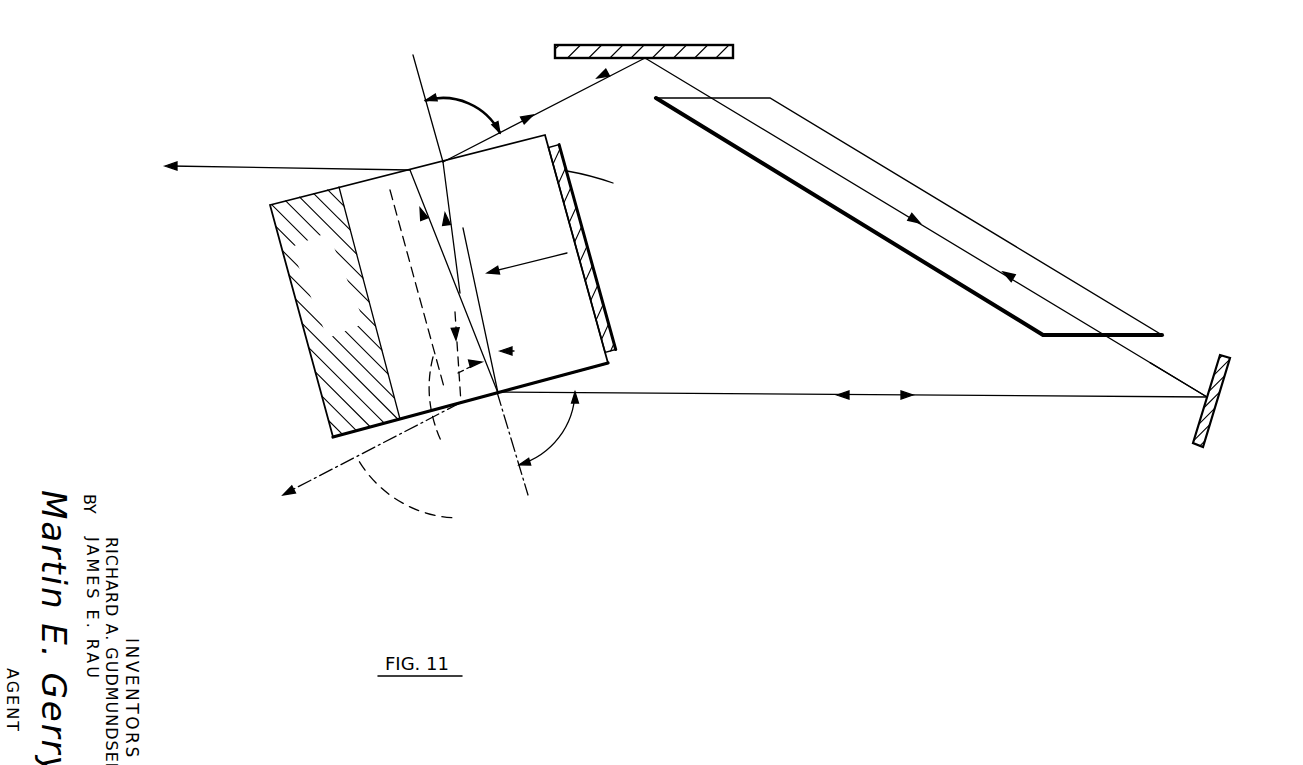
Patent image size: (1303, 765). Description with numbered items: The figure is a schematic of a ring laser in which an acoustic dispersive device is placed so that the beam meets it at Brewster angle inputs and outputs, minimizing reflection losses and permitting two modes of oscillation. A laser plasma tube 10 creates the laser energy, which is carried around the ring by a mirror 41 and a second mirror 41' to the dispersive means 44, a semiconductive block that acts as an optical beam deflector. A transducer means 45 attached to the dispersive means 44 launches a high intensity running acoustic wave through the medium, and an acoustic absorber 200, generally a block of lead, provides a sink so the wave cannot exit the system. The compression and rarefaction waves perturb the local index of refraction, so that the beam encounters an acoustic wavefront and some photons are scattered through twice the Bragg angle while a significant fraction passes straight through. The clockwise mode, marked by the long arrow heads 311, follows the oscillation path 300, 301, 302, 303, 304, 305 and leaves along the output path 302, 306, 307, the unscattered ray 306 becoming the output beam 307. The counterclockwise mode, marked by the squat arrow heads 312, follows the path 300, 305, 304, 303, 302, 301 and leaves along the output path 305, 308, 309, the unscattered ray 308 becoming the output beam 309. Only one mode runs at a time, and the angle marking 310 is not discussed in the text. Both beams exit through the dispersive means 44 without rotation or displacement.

The laser plasma tube 10 is at (1100, 318).
The mirror 41 is at (676, 39).
The mirror 41' is at (1196, 422).
The dispersive means 44 is at (640, 366).
The transducer means 45 is at (590, 266).
The acoustic absorber 200 is at (328, 345).
The oscillation path segment 300 is at (698, 92).
The oscillation path segment 301 is at (1160, 364).
The oscillation path segment 302 is at (862, 397).
The oscillation path segment 303 is at (462, 300).
The oscillation path segment 304 is at (460, 218).
The oscillation path segment 305 is at (547, 107).
The ray 306 is at (440, 236).
The output beam 307 is at (250, 169).
The ray 308 is at (545, 459).
The output beam 309 is at (423, 495).
The angle arc 310 is at (455, 413).
The long arrow heads 311 is at (248, 167).
The squat arrow heads 312 is at (600, 82).